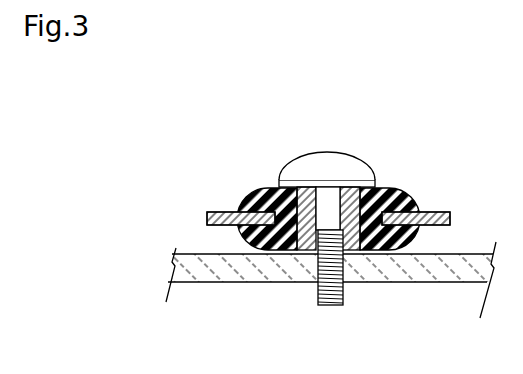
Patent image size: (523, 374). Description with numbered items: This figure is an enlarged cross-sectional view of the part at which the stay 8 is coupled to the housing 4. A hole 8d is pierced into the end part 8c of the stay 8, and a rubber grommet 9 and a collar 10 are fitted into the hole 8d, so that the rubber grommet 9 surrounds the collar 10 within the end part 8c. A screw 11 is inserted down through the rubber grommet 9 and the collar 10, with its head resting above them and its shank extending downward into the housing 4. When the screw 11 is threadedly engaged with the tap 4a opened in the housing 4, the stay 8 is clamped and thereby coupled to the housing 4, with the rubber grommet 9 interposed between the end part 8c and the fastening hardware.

The housing 4 is at (331, 293).
The tap 4a is at (358, 290).
The stay 8 is at (211, 188).
The end part 8c is at (241, 218).
The hole 8d is at (427, 194).
The rubber grommet 9 is at (326, 187).
The collar 10 is at (345, 189).
The screw 11 is at (327, 155).